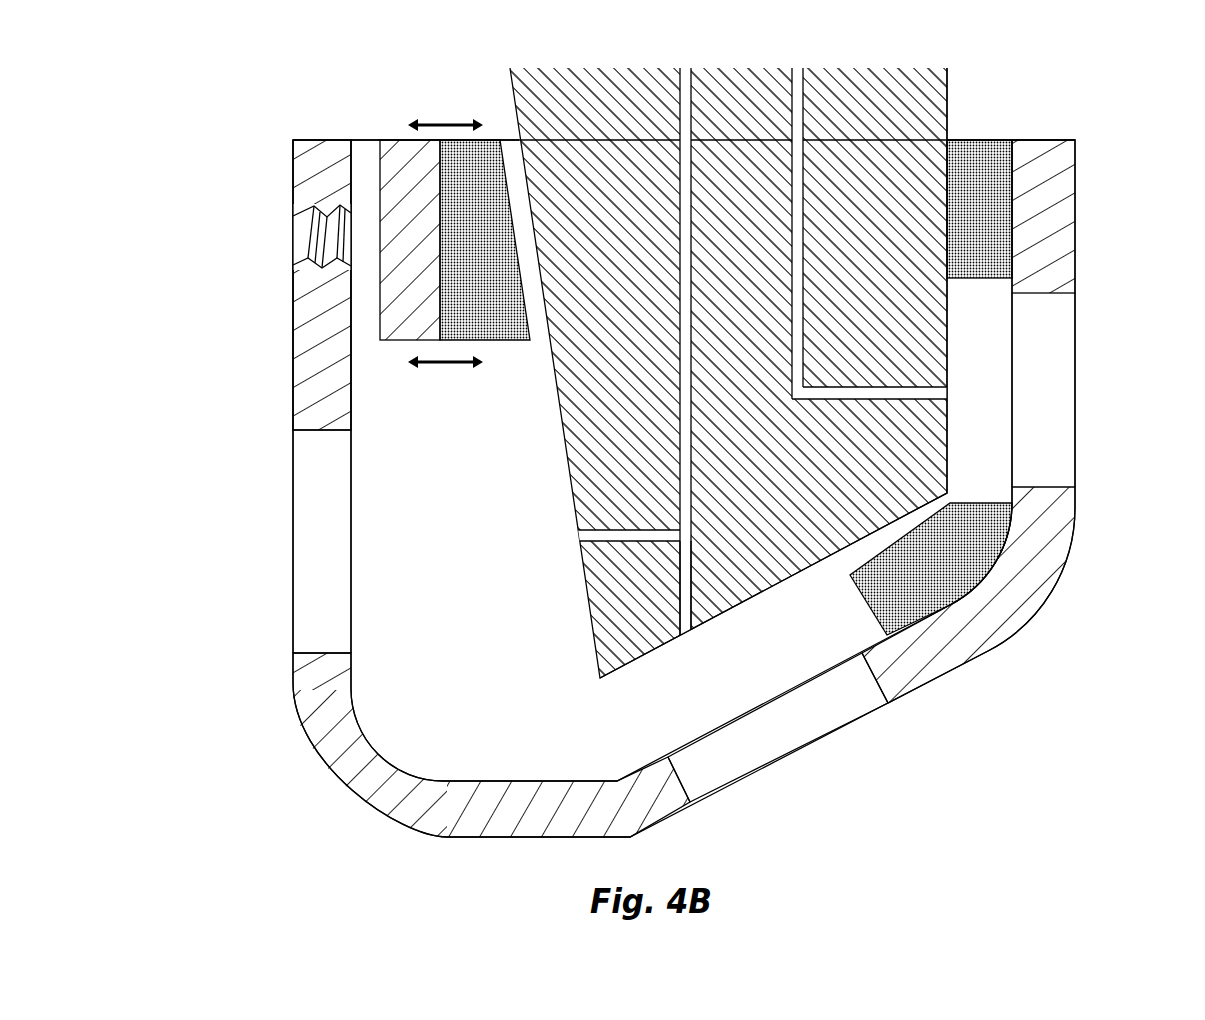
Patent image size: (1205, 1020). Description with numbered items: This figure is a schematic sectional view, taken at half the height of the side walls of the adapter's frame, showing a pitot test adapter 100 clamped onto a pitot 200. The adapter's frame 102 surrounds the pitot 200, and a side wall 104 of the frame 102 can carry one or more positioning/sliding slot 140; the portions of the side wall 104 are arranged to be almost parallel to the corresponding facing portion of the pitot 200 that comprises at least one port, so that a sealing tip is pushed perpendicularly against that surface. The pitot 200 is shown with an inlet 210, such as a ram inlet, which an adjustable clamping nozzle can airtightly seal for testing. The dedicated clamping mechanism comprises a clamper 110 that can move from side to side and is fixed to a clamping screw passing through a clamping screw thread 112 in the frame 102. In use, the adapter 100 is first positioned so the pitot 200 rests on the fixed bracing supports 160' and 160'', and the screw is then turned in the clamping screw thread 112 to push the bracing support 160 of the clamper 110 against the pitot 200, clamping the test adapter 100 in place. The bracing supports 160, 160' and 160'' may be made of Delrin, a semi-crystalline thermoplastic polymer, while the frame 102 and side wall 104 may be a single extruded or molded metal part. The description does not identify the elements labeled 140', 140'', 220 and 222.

The pitot test adapter 100 is at (207, 70).
The adapter's frame 102 is at (474, 680).
The side wall 104 is at (1046, 214).
The clamper 110 is at (383, 135).
The clamping screw thread 112 is at (300, 243).
The positioning/sliding slot 140 is at (1020, 498).
The housing wall diagonal section 140' is at (778, 739).
The housing wall left section 140'' is at (278, 541).
The pitot bracing support 160 is at (487, 285).
The fixed bracing support 160' is at (1010, 177).
The fixed bracing support 160'' is at (947, 612).
The pitot 200 is at (962, 95).
The inlet 210 is at (1003, 364).
The slot 220 is at (580, 536).
The slot portion 222 is at (683, 632).